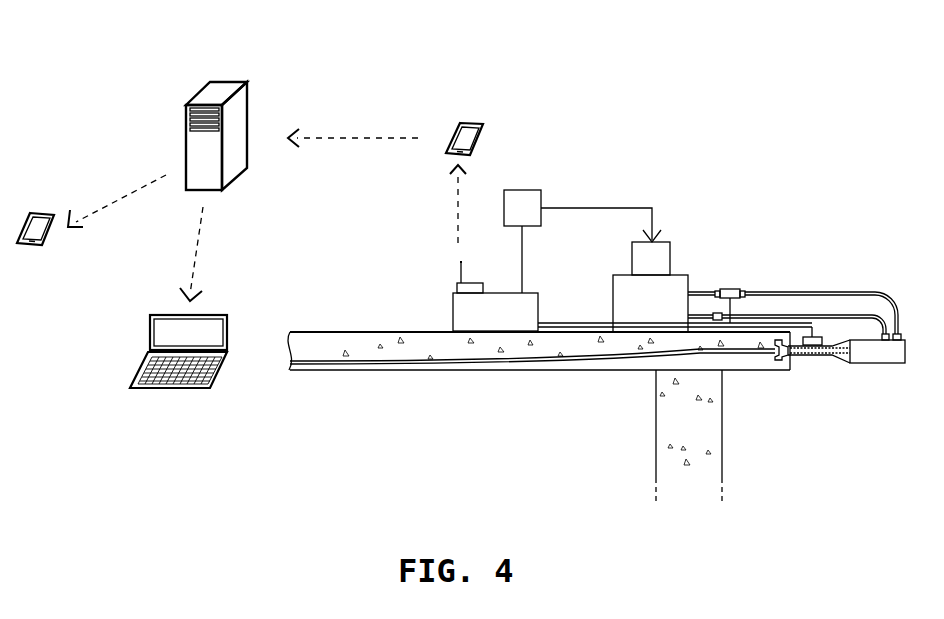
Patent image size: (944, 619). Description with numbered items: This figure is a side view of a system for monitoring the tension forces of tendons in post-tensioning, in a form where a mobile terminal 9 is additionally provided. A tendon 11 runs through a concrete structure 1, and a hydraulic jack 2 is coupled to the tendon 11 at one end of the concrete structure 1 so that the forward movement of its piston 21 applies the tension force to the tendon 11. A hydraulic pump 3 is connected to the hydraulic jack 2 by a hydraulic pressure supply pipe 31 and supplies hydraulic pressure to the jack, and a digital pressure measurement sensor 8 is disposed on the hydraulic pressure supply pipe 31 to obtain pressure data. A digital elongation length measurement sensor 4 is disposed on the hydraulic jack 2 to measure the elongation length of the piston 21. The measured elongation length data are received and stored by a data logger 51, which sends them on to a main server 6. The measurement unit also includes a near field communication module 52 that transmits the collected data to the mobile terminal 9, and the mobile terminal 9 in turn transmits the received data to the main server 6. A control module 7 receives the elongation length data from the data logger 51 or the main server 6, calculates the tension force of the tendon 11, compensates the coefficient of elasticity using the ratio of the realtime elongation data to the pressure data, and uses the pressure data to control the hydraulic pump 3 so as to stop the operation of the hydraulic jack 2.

The concrete structure 1 is at (384, 372).
The tendon 11 is at (582, 365).
The hydraulic jack 2 is at (859, 378).
The piston 21 is at (817, 358).
The hydraulic pump 3 is at (680, 273).
The hydraulic pressure supply pipe 31 is at (810, 292).
The digital elongation length measurement sensor 4 is at (823, 340).
The data logger 51 is at (453, 318).
The near field communication module 52 is at (455, 287).
The main server 6 is at (228, 82).
The control module 7 is at (545, 197).
The digital pressure measurement sensor 8 is at (730, 289).
The mobile terminal 9 is at (486, 136).